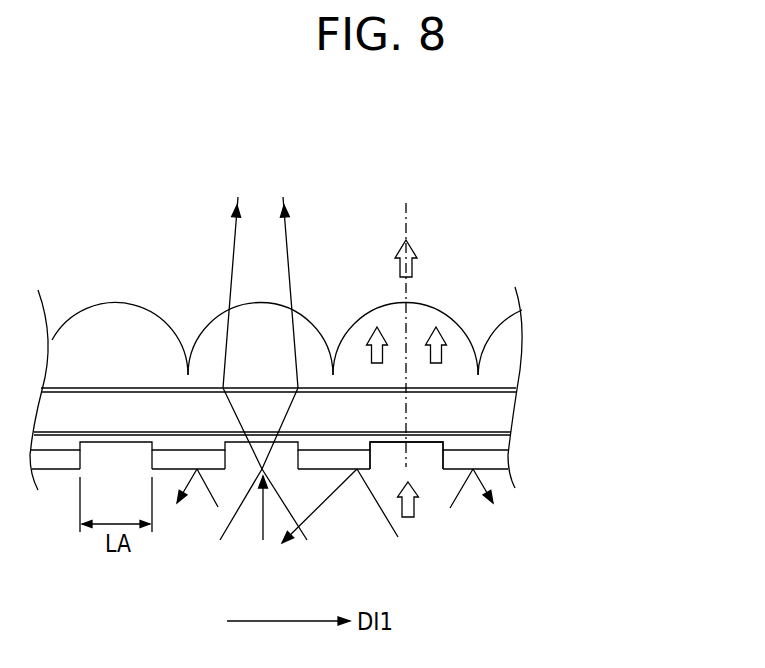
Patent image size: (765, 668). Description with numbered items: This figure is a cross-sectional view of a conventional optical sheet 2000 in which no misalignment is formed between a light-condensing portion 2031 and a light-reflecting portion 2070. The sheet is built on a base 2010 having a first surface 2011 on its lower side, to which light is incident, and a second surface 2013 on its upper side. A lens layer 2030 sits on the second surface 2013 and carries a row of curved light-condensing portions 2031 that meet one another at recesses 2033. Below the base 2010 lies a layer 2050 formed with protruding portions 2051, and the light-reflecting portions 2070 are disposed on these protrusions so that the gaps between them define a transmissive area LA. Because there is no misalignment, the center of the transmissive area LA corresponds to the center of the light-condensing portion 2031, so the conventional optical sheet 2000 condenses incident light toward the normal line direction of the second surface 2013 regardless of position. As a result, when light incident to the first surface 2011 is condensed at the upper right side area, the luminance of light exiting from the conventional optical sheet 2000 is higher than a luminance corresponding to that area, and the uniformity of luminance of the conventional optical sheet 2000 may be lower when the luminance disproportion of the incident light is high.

The conventional optical sheet 2000 is at (367, 117).
The base substrate 2010 is at (355, 411).
The first surface 2011 is at (502, 427).
The second surface 2013 is at (503, 400).
The lens layer 2030 is at (504, 372).
The light-condensing portion 2031 is at (432, 305).
The lens boundary 2033 is at (479, 375).
The light blocking layer 2050 is at (502, 445).
The opening 2051 is at (443, 442).
The light-reflecting portion 2070 is at (502, 459).